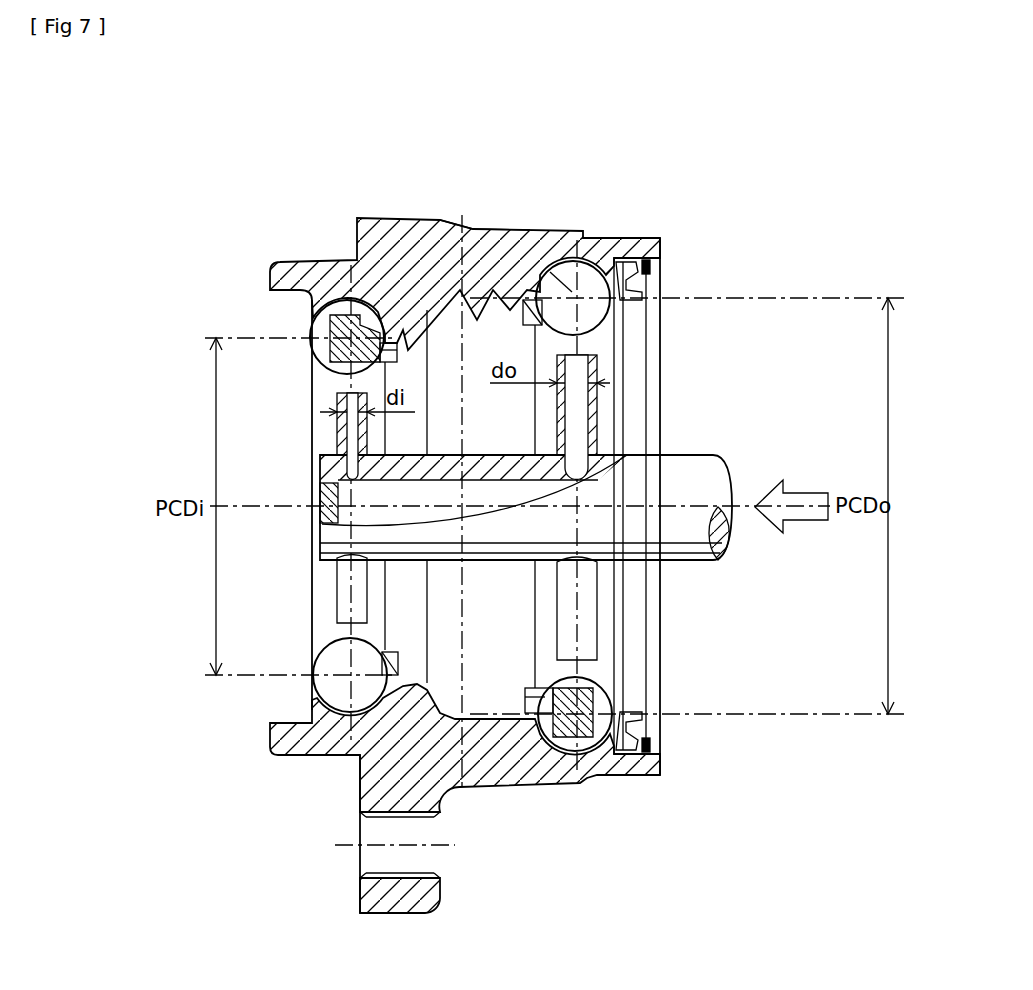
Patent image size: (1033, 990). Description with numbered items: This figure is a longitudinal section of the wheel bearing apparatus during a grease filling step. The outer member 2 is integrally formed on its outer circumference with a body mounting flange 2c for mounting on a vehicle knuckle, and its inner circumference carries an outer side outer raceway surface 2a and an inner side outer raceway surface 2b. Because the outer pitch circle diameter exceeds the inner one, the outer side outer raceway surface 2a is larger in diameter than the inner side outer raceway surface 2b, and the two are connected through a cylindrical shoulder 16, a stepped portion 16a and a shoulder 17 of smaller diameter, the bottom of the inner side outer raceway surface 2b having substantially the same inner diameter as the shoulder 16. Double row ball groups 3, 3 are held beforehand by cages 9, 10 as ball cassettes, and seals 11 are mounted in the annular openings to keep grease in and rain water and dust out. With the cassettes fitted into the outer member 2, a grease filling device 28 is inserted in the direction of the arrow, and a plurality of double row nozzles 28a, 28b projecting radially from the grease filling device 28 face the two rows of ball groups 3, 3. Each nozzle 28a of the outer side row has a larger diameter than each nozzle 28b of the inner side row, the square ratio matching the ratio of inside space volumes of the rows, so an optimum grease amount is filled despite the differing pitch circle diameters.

The outer member 2 is at (437, 222).
The outer side outer raceway surface 2a is at (575, 292).
The inner side outer raceway surface 2b is at (330, 312).
The body mounting flange 2c is at (395, 887).
The ball group 3 is at (373, 688).
The cage 9 is at (553, 688).
The cage 10 is at (393, 650).
The seal 11 is at (640, 258).
The cylindrical shoulder 16 is at (529, 232).
The stepped portion 16a is at (482, 228).
The shoulder 17 is at (385, 342).
The grease filling device 28 is at (702, 470).
The nozzle of the outer side row 28a is at (590, 453).
The nozzle of the inner side row 28b is at (340, 437).